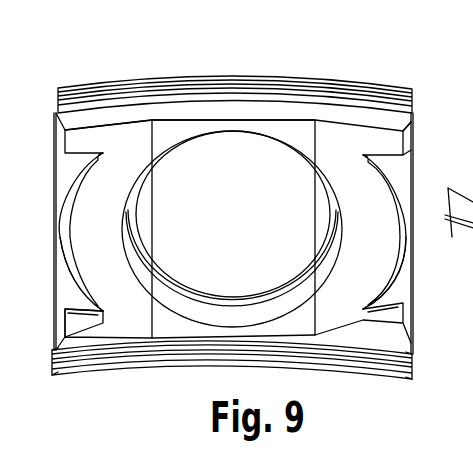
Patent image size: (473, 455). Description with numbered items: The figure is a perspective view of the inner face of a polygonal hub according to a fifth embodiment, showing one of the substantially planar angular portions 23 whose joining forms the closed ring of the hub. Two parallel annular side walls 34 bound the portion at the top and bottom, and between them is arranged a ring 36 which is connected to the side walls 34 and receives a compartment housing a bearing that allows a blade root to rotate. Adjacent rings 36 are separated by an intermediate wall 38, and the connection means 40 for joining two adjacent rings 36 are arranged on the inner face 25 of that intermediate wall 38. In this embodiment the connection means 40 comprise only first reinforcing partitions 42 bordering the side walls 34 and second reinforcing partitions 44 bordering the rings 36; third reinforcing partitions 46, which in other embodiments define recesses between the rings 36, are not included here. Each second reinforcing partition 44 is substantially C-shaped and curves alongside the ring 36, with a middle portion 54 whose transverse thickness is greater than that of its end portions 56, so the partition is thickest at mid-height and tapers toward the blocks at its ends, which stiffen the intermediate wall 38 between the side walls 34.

The angular portion 23 is at (99, 380).
The inner face 25 is at (110, 327).
The annular side wall 34 is at (182, 79).
The ring 36 is at (177, 275).
The intermediate wall 38 is at (390, 144).
The connection means 40 is at (362, 142).
The first reinforcing partition 42 is at (280, 133).
The second reinforcing partition 44 is at (97, 203).
The third reinforcing partition 46 is at (373, 240).
The middle portion 54 is at (92, 230).
The end portion 56 is at (125, 160).